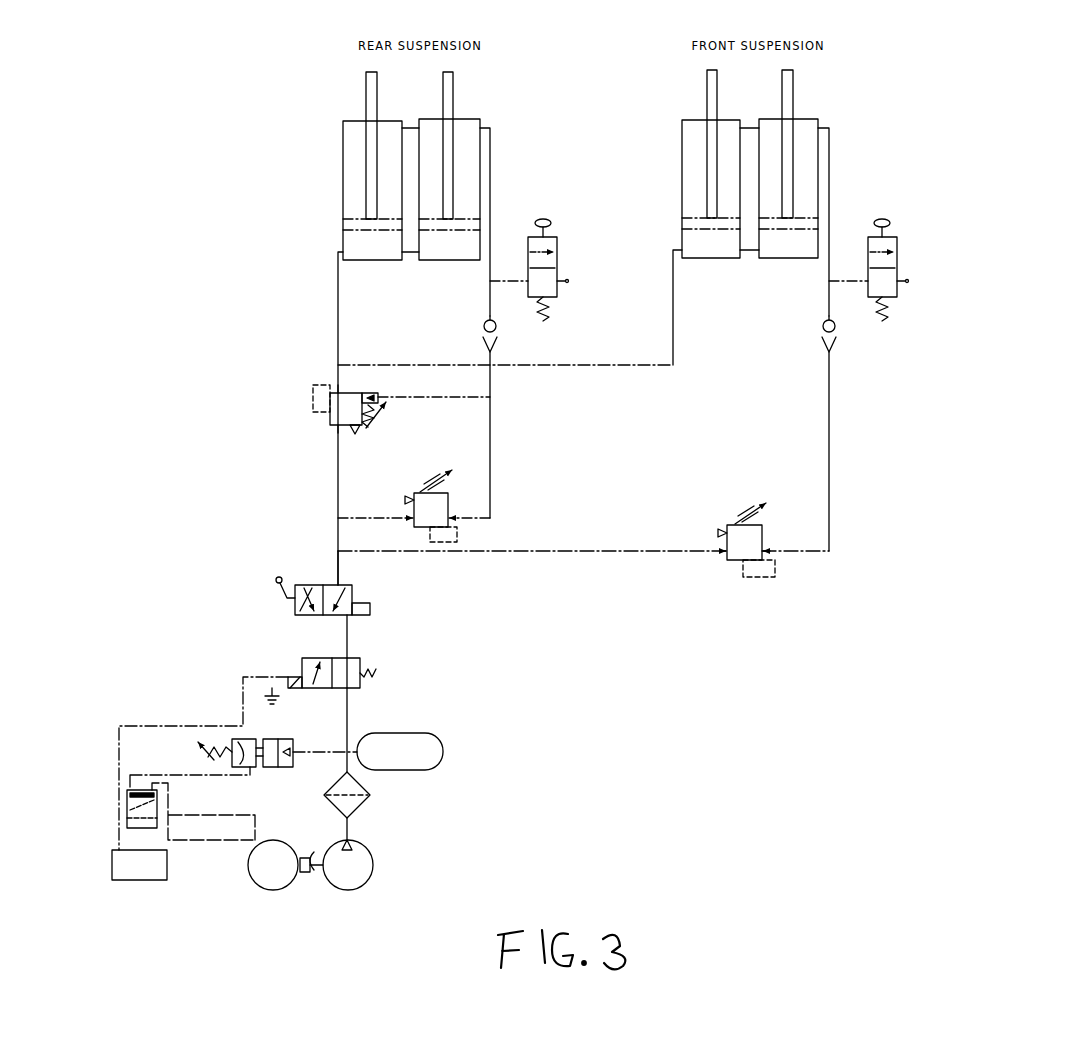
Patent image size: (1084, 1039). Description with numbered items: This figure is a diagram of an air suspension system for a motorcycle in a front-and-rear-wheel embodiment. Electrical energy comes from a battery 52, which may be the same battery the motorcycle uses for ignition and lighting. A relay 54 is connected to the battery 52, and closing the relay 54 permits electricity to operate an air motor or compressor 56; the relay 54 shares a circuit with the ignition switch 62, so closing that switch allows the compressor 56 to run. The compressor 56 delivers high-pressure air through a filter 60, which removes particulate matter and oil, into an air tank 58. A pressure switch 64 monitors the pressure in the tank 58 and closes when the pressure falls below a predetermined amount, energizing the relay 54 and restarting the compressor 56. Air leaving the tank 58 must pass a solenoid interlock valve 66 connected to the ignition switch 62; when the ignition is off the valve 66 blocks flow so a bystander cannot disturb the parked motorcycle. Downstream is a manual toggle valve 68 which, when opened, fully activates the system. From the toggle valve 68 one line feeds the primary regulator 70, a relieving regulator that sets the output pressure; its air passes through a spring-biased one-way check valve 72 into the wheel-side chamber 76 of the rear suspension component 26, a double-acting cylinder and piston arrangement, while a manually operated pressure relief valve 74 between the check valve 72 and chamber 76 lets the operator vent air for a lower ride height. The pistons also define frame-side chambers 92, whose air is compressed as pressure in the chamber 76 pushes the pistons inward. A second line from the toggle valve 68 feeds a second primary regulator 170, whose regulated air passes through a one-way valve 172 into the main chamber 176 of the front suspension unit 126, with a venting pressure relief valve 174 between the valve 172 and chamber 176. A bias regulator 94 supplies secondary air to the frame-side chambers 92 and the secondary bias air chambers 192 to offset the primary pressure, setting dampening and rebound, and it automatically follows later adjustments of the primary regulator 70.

The suspension component 26 is at (486, 118).
The wheel-side chamber 76 is at (348, 146).
The frame-side chambers 92 is at (428, 242).
The pressure relief valve 74 is at (550, 246).
The one-way check valve 72 is at (485, 336).
The bias regulator 94 is at (338, 406).
The primary regulator 70 is at (445, 498).
The toggle valve 68 is at (346, 600).
The solenoid interlock valve 66 is at (356, 672).
The pressure switch 64 is at (270, 740).
The ignition switch 62 is at (141, 723).
The air tank 58 is at (426, 738).
The filter 60 is at (364, 802).
The compressor 56 is at (262, 886).
The relay 54 is at (135, 822).
The battery 52 is at (110, 866).
The suspension unit 126 is at (824, 118).
The main chamber 176 is at (690, 158).
The secondary bias air chambers 192 is at (765, 242).
The venting pressure relief valve 174 is at (893, 246).
The one-way valve 172 is at (824, 336).
The second primary regulator 170 is at (755, 540).